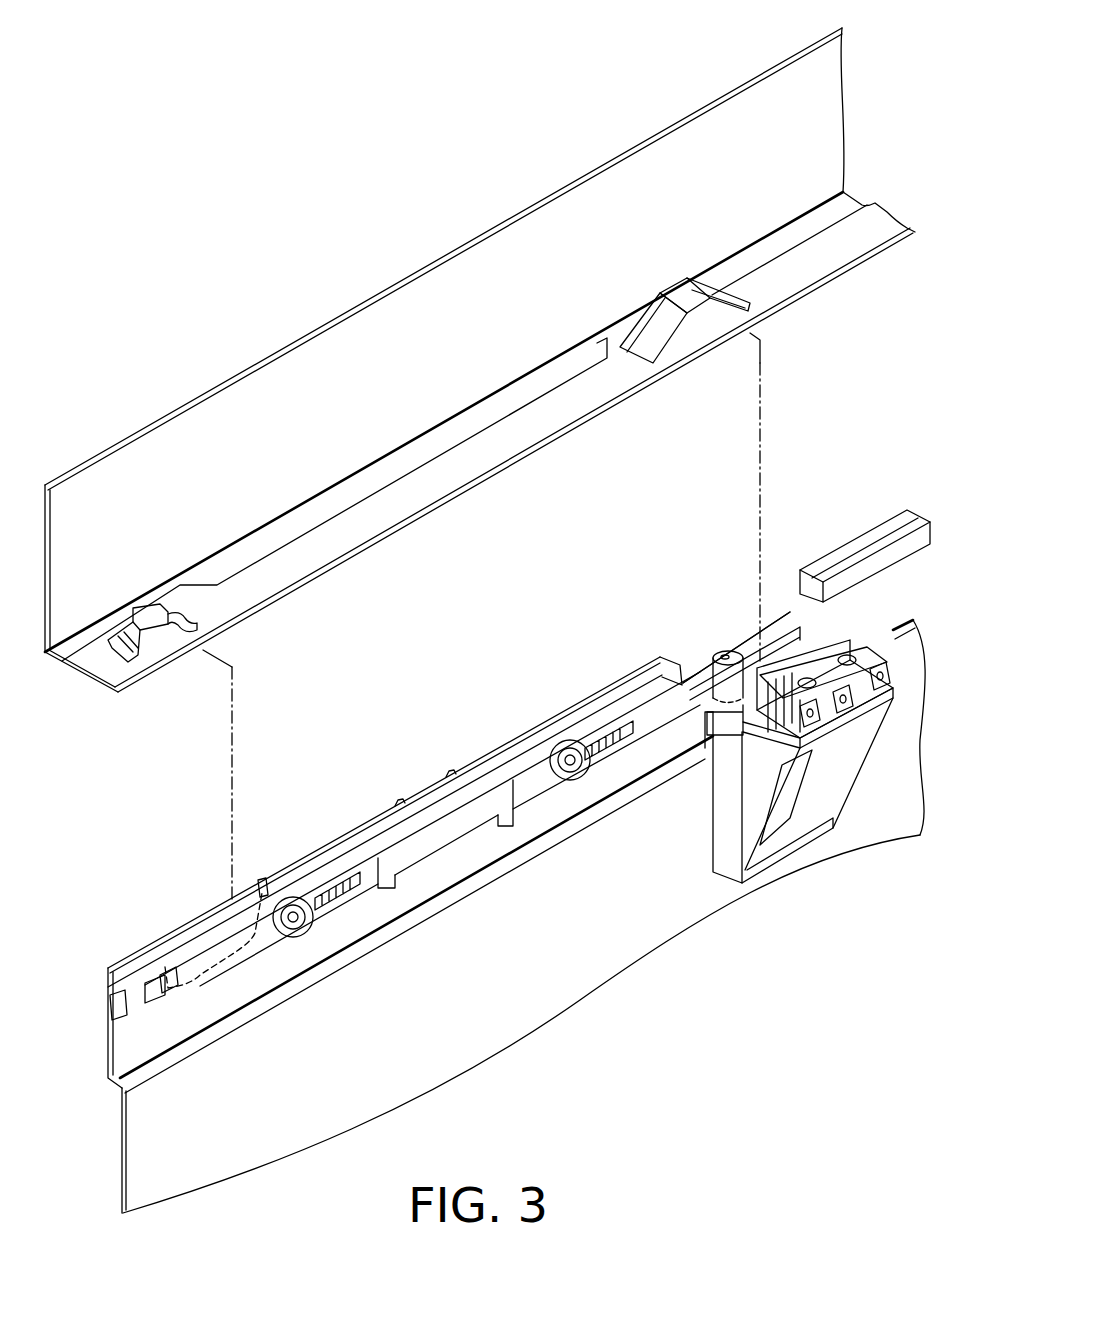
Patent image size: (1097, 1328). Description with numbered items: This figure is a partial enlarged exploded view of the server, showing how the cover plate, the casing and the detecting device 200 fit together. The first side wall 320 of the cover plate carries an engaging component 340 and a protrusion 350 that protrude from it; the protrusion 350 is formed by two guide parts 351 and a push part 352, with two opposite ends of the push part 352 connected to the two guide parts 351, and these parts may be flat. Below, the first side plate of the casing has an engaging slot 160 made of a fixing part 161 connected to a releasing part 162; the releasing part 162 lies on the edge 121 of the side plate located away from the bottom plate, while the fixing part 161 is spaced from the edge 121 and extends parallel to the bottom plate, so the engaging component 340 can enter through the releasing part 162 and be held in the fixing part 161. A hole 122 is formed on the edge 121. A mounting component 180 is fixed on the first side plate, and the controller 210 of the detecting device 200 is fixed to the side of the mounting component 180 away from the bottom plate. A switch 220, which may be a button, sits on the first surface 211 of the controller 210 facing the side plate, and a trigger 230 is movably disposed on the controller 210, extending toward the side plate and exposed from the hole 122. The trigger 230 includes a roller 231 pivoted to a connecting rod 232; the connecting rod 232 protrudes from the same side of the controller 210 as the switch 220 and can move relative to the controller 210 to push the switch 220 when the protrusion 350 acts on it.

The edge 121 is at (308, 842).
The hole 122 is at (786, 586).
The engaging slot 160 is at (180, 906).
The fixing part 161 is at (139, 938).
The releasing part 162 is at (213, 938).
The mounting component 180 is at (733, 803).
The detecting device 200 is at (700, 630).
The controller 210 is at (793, 640).
The first surface 211 is at (790, 612).
The switch 220 is at (705, 677).
The trigger 230 is at (733, 636).
The roller 231 is at (708, 690).
The connecting rod 232 is at (770, 665).
The first side wall 320 is at (470, 468).
The engaging component 340 is at (150, 615).
The protrusion 350 is at (628, 204).
The guide part 351 is at (653, 338).
The push part 352 is at (678, 297).